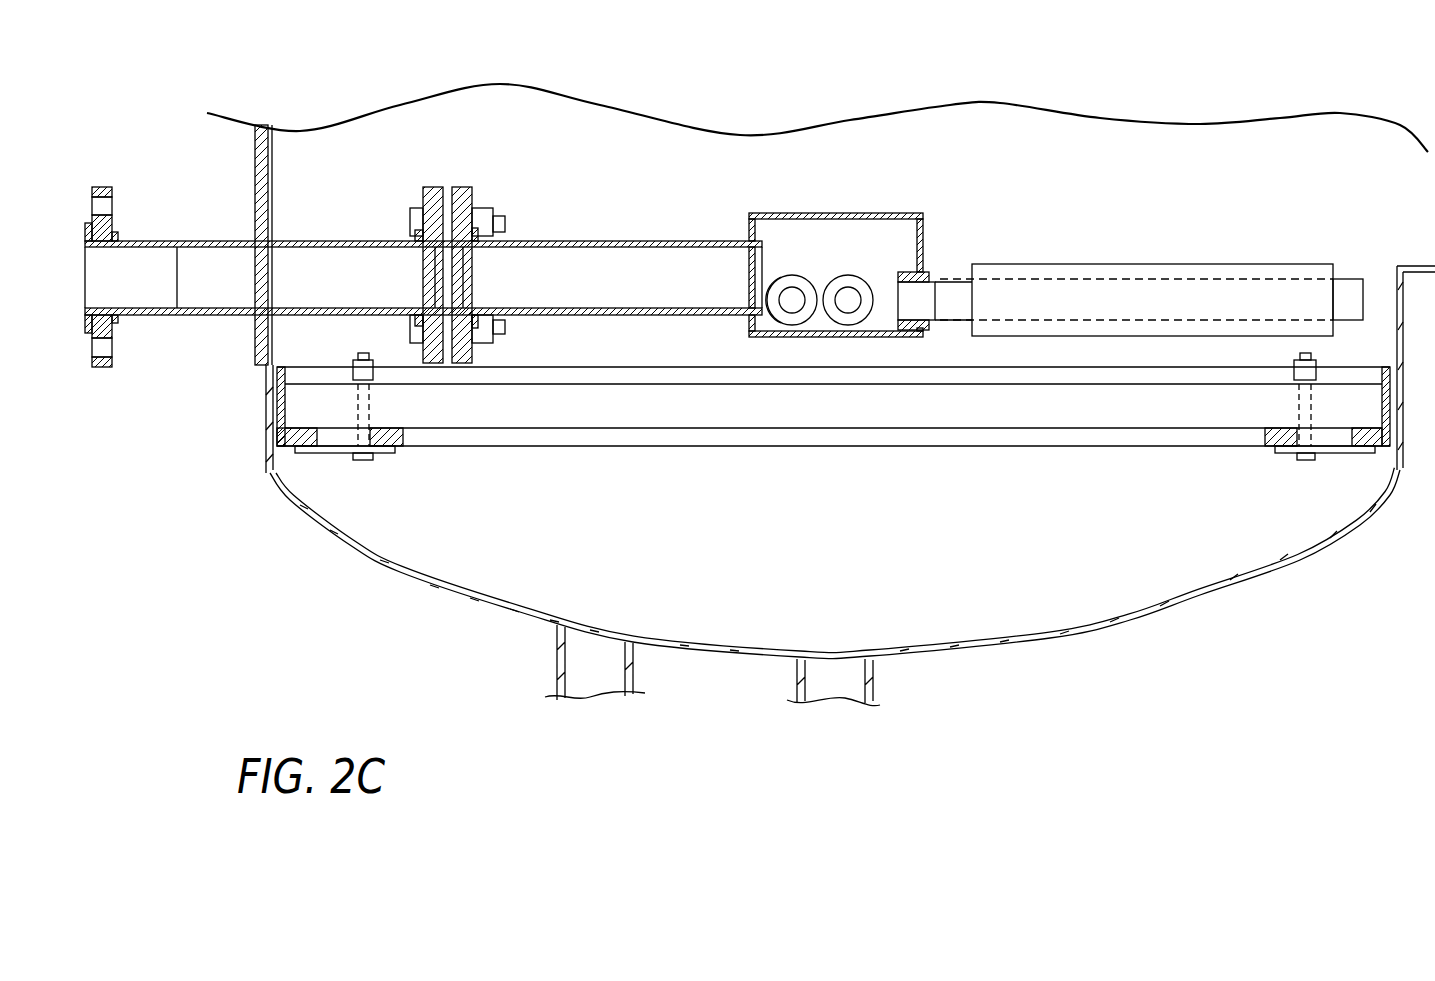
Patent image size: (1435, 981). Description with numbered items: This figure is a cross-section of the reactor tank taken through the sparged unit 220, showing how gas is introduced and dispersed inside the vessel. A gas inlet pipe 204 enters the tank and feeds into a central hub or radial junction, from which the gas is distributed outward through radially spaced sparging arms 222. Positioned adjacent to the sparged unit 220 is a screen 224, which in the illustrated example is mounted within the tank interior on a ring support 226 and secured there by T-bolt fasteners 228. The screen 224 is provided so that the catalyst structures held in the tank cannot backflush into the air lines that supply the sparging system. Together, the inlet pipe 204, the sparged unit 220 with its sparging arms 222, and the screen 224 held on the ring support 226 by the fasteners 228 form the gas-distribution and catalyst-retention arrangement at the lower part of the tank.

The gas inlet pipe 204 is at (143, 283).
The sparged unit 220 is at (868, 178).
The sparging arms 222 is at (1185, 280).
The screen 224 is at (632, 445).
The ring support 226 is at (283, 447).
The T-bolt fasteners 228 is at (362, 462).